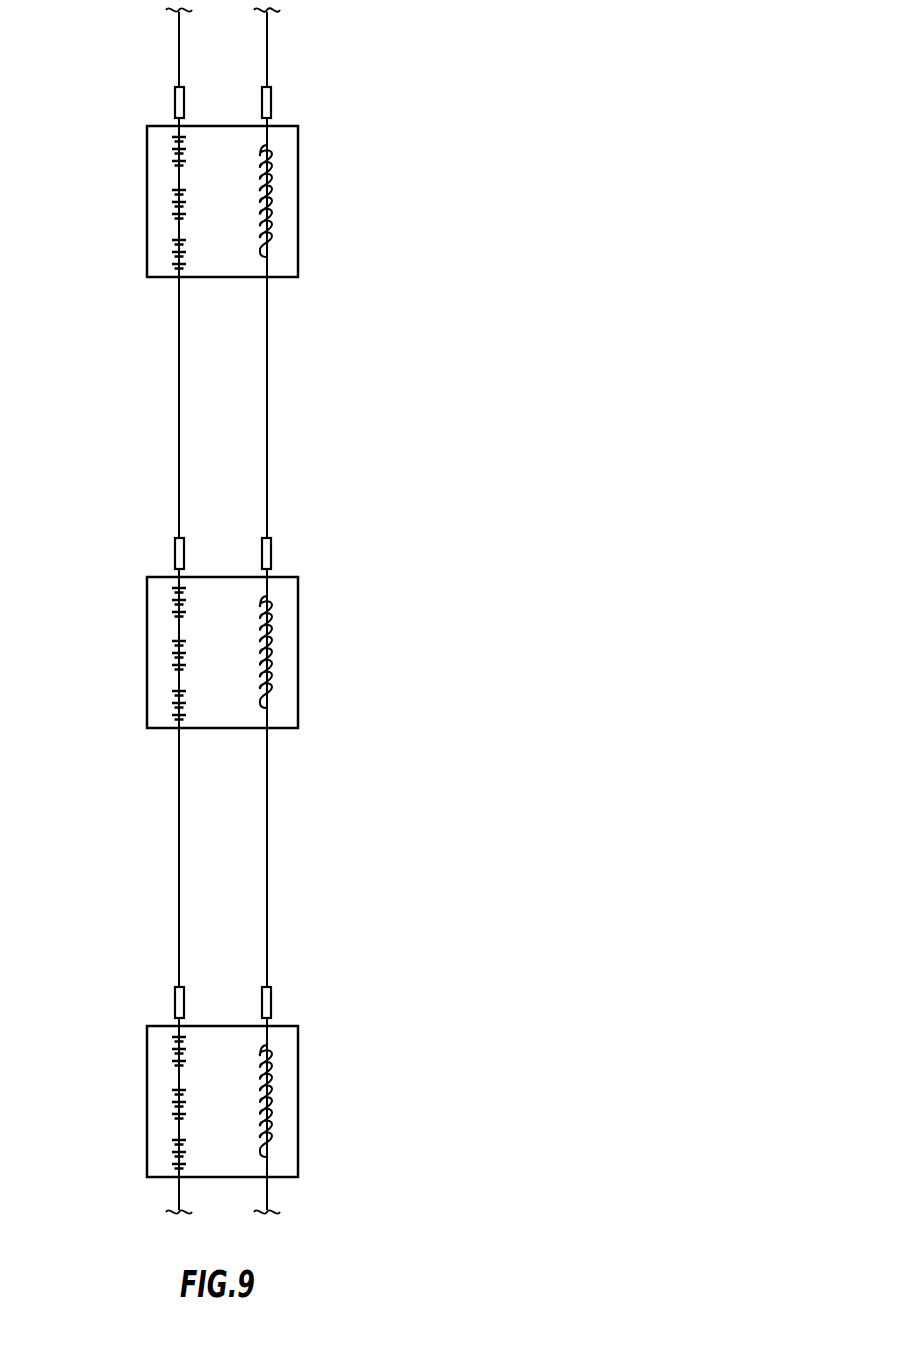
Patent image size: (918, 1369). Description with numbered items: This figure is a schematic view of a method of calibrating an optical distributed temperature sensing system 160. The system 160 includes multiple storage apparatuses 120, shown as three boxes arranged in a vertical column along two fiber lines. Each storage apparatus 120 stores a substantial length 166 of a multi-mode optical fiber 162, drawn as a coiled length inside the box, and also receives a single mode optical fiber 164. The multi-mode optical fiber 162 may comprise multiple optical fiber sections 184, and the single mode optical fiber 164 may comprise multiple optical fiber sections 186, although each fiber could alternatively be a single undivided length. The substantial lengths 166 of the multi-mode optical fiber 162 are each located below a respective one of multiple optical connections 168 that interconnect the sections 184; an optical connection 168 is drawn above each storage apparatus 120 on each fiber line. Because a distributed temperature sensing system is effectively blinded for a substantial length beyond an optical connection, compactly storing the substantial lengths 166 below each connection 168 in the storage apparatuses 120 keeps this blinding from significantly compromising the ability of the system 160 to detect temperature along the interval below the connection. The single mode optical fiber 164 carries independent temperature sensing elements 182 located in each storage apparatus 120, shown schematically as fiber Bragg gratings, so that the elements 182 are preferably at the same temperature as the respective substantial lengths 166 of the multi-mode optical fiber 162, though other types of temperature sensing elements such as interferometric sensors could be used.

The optical distributed temperature sensing system 160 is at (308, 610).
The multi-mode optical fiber 162 is at (272, 449).
The single mode optical fiber 164 is at (173, 760).
The storage apparatus 120 is at (220, 651).
The substantial length 166 is at (340, 651).
The optical connection 168 is at (220, 547).
The temperature sensing element 182 is at (103, 653).
The optical fiber section 184 is at (268, 66).
The optical fiber section 186 is at (178, 31).